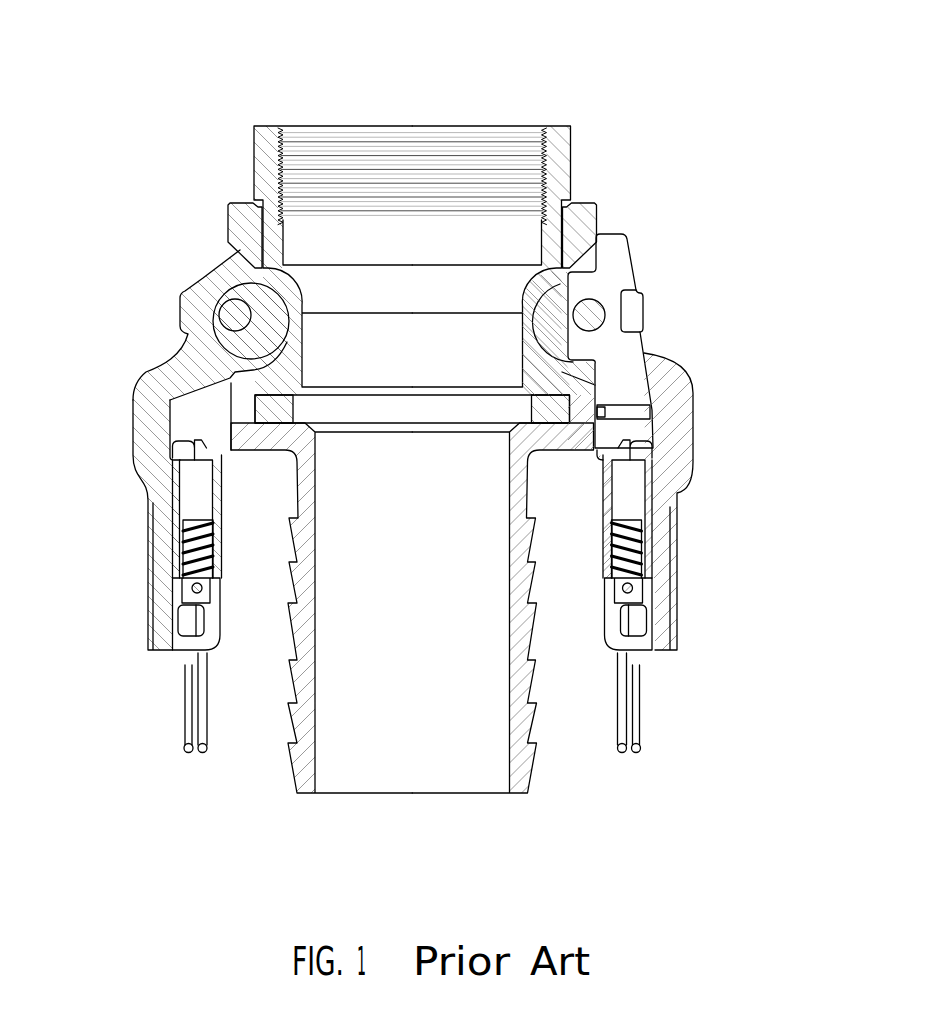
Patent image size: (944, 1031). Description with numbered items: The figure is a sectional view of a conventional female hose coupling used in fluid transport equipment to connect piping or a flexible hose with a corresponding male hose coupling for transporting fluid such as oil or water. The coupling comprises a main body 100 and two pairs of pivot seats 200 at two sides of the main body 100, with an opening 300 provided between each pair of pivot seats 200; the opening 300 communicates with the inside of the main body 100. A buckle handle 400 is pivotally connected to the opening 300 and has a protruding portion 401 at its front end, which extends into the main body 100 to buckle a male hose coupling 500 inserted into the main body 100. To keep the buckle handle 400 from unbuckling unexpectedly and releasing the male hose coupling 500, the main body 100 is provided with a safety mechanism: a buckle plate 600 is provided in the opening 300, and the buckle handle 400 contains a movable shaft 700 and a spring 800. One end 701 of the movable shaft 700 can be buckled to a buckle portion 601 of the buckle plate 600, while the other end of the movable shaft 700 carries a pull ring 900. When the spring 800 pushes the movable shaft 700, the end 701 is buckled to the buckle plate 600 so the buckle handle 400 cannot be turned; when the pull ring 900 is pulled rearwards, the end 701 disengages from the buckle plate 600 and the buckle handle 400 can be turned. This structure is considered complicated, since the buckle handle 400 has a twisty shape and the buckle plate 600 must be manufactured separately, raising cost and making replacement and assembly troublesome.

The main body 100 is at (140, 400).
The pivot seats 200 is at (180, 312).
The opening 300 is at (222, 270).
The buckle handle 400 is at (662, 611).
The protruding portion 401 is at (543, 307).
The male hose coupling 500 is at (378, 127).
The buckle plate 600 is at (614, 258).
The buckle portion 601 is at (650, 405).
The movable shaft 700 is at (632, 486).
The end of the movable shaft 701 is at (650, 450).
The spring 800 is at (642, 534).
The pull ring 900 is at (633, 697).